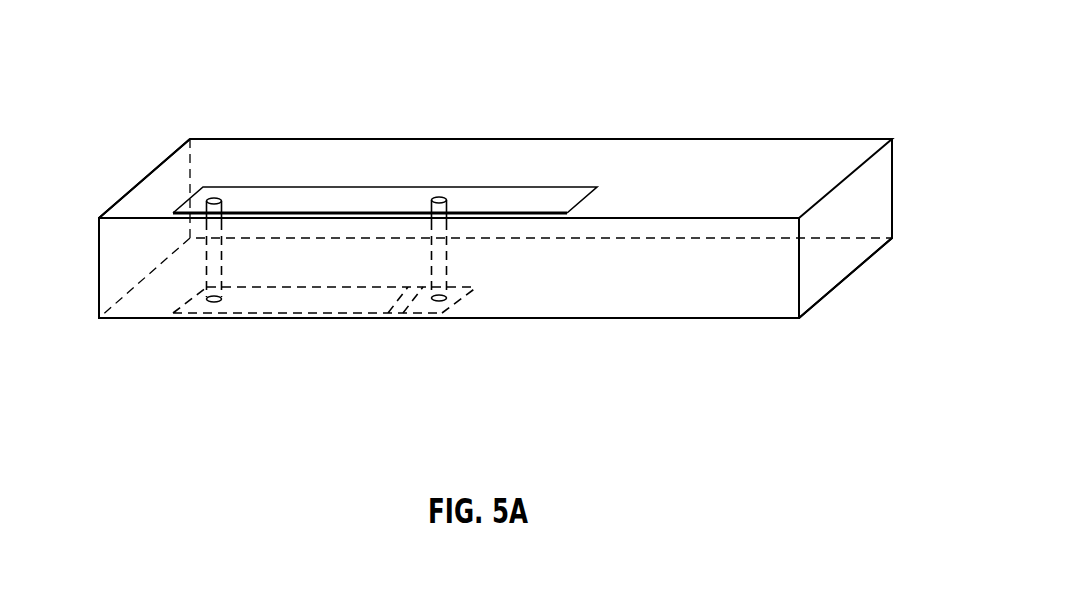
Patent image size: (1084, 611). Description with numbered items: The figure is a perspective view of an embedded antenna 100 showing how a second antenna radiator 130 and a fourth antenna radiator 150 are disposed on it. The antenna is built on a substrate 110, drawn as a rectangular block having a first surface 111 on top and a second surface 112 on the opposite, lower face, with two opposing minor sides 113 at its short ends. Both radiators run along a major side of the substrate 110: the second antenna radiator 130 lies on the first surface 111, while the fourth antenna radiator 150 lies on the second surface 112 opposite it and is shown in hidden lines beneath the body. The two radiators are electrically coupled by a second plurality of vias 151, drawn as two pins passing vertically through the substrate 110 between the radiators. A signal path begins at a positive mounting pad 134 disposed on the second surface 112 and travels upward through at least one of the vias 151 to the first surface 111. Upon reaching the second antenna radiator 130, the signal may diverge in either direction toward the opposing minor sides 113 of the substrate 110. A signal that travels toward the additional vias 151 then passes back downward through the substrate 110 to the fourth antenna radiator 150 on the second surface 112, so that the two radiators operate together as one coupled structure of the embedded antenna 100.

The embedded antenna 100 is at (133, 37).
The substrate 110 is at (672, 148).
The first surface 111 is at (803, 150).
The second surface 112 is at (475, 138).
The minor sides 113 is at (147, 176).
The second antenna radiator 130 is at (268, 204).
The positive mounting pad 134 is at (470, 298).
The fourth antenna radiator 150 is at (323, 308).
The second plurality of vias 151 is at (448, 252).